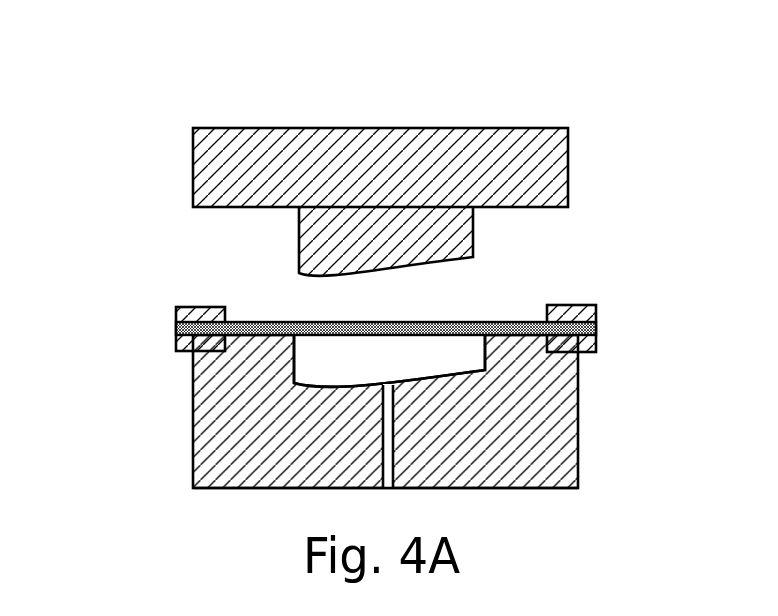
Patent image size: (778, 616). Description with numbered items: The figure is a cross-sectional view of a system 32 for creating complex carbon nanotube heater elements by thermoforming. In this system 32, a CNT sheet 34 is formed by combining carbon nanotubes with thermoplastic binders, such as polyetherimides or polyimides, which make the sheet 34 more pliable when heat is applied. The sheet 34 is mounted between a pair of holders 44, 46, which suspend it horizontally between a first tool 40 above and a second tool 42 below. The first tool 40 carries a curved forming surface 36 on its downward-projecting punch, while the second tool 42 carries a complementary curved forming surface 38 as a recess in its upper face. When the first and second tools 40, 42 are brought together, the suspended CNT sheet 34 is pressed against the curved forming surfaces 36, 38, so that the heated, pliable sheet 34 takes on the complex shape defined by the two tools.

The system 32 is at (138, 97).
The CNT sheet 34 is at (512, 322).
The forming surface 36 is at (347, 278).
The forming surface 38 is at (356, 388).
The first tool 40 is at (407, 128).
The second tool 42 is at (436, 411).
The holder 44 is at (187, 345).
The holder 46 is at (585, 353).